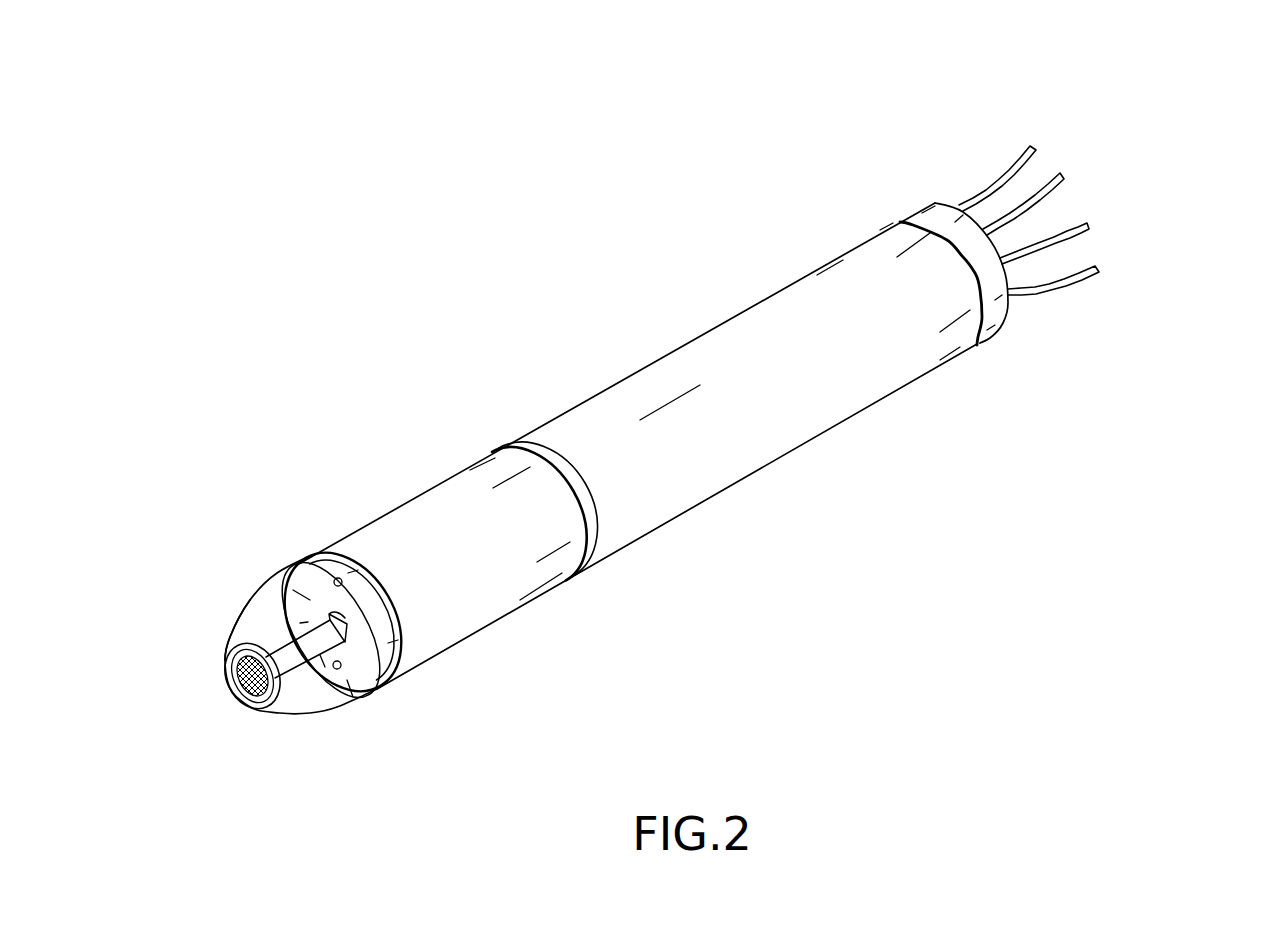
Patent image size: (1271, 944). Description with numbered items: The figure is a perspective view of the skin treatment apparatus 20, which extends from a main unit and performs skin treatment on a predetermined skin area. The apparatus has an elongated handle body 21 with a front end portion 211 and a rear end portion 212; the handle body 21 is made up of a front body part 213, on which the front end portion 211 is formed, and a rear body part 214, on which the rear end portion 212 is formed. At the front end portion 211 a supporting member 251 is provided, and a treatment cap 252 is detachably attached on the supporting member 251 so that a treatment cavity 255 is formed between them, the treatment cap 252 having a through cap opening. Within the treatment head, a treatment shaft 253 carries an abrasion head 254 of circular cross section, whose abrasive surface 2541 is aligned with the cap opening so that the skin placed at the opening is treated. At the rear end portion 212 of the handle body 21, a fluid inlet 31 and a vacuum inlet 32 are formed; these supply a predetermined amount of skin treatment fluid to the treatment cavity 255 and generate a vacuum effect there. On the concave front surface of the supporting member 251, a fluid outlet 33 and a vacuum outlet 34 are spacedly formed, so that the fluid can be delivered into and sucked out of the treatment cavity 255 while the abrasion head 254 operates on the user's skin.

The skin treatment apparatus 20 is at (588, 307).
The handle body 21 is at (633, 417).
The front end portion 211 is at (417, 657).
The rear end portion 212 is at (872, 247).
The front body part 213 is at (453, 510).
The rear body part 214 is at (703, 445).
The supporting member 251 is at (308, 577).
The treatment cap 252 is at (250, 627).
The treatment shaft 253 is at (320, 680).
The abrasion head 254 is at (252, 697).
The abrasive surface 2541 is at (252, 680).
The treatment cavity 255 is at (257, 637).
The fluid inlet 31 is at (1050, 142).
The vacuum inlet 32 is at (1122, 238).
The fluid outlet 33 is at (333, 553).
The vacuum outlet 34 is at (338, 678).